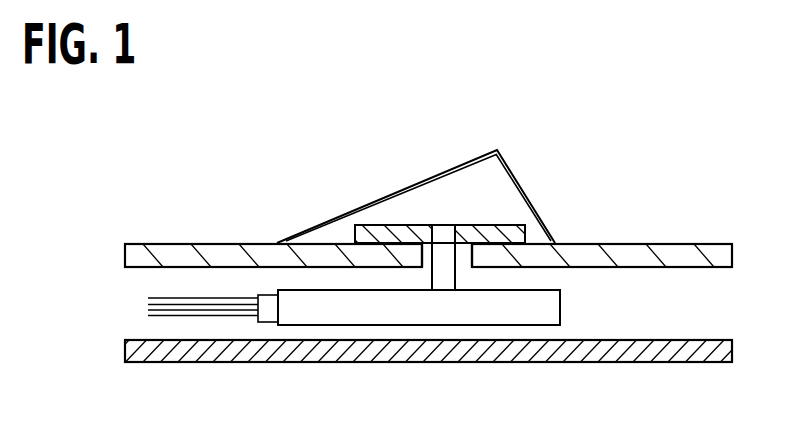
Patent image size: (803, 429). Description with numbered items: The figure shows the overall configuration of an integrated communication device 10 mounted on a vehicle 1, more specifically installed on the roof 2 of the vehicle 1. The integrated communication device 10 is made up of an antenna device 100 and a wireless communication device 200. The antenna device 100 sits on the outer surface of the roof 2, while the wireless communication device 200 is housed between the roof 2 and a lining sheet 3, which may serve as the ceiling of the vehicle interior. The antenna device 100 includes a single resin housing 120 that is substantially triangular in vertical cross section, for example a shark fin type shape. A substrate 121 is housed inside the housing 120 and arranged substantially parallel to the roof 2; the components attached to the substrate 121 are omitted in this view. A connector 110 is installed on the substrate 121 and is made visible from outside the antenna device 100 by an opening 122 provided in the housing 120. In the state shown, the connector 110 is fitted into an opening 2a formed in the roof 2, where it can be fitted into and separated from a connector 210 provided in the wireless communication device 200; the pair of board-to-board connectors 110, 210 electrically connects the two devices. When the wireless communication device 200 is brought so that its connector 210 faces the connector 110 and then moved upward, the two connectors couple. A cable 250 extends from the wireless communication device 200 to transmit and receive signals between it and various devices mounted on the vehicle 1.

The vehicle 1 is at (748, 215).
The roof 2 is at (147, 245).
The opening 2a is at (472, 253).
The lining sheet 3 is at (677, 340).
The integrated communication device 10 is at (678, 165).
The antenna device 100 is at (547, 193).
The connector 110 is at (413, 224).
The housing 120 is at (342, 217).
The substrate 121 is at (433, 225).
The opening 122 is at (452, 226).
The wireless communication device 200 is at (573, 290).
The connector 210 is at (432, 265).
The cable 250 is at (160, 298).